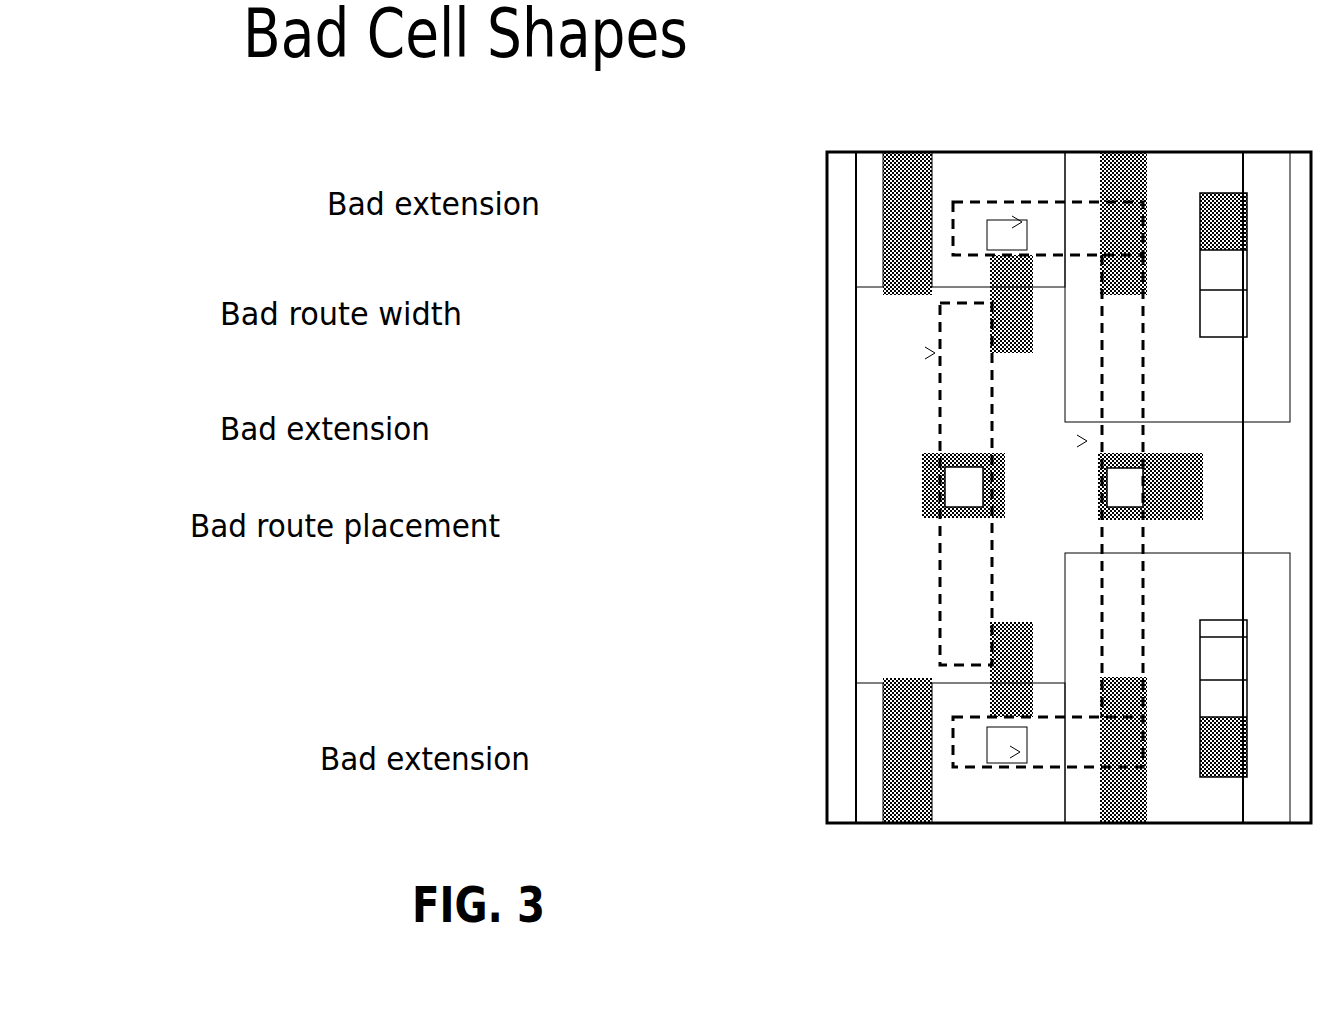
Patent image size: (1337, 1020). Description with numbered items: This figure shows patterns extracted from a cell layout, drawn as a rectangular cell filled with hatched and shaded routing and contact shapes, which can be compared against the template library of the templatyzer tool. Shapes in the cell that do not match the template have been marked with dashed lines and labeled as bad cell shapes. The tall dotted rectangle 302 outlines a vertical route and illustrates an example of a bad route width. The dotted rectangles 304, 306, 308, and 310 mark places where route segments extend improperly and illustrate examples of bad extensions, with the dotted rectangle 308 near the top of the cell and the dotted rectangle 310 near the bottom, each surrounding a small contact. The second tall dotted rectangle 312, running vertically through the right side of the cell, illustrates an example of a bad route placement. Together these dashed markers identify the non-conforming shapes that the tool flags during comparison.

The dotted rectangle 302 is at (925, 353).
The dotted rectangle 304 is at (455, 430).
The dotted rectangle 306 is at (455, 434).
The dotted rectangle 308 is at (1012, 222).
The dotted rectangle 310 is at (1010, 752).
The dotted rectangle 312 is at (1077, 441).